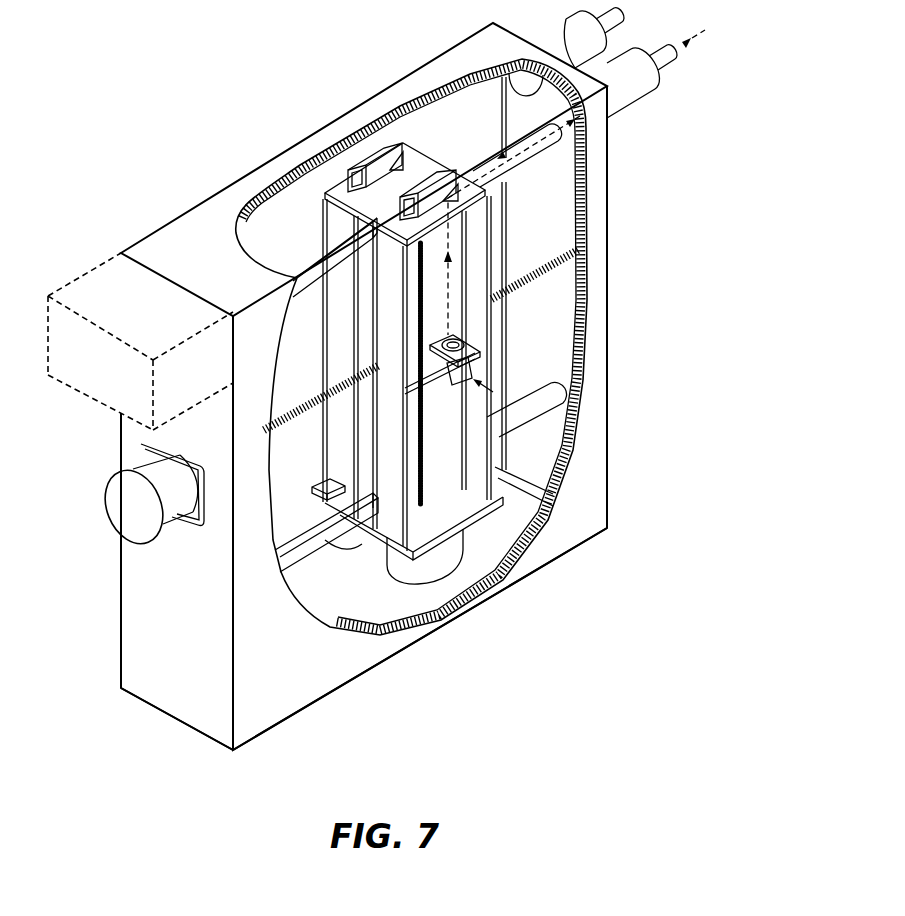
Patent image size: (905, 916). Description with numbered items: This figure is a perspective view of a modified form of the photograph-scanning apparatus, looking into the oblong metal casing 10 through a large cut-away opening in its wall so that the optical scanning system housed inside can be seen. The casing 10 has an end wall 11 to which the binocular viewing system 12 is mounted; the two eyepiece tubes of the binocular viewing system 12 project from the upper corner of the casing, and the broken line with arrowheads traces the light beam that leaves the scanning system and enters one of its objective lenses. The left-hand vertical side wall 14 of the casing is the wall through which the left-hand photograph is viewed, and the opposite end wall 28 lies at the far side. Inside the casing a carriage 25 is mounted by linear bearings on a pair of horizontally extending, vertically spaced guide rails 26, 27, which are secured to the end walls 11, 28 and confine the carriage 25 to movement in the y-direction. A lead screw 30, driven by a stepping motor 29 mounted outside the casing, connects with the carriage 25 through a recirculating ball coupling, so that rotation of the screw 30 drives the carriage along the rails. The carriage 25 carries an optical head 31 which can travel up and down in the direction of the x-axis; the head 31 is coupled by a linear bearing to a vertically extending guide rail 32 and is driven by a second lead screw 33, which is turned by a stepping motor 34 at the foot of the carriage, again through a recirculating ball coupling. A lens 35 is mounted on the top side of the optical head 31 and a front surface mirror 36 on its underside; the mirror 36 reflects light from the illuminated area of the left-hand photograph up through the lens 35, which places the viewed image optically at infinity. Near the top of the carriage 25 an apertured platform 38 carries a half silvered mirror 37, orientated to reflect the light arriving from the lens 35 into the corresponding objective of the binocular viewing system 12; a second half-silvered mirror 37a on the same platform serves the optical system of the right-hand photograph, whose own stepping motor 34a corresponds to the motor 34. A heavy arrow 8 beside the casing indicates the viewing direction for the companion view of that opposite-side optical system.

The section line for FIG. 8 is at (72, 405).
The oblong metal casing 10 is at (188, 209).
The end wall 11 is at (563, 244).
The binocular viewing system 12 is at (628, 62).
The left-hand vertical side wall 14 is at (340, 673).
The carriage 25 is at (388, 325).
The guide rail 26 is at (535, 150).
The guide rail 27 is at (546, 397).
The end wall 28 is at (180, 682).
The stepping motor 29 is at (122, 515).
The lead screw 30 is at (540, 277).
The optical head 31 is at (413, 385).
The guide rail 32 is at (468, 418).
The lead screw 33 is at (422, 444).
The stepping motor 34 is at (403, 563).
The stepping motor 34a is at (357, 549).
The lens 35 is at (450, 336).
The front surface mirror 36 is at (447, 378).
The half silvered mirror 37 is at (432, 168).
The half-silvered mirror 37a is at (435, 168).
The apertured platform 38 is at (340, 199).